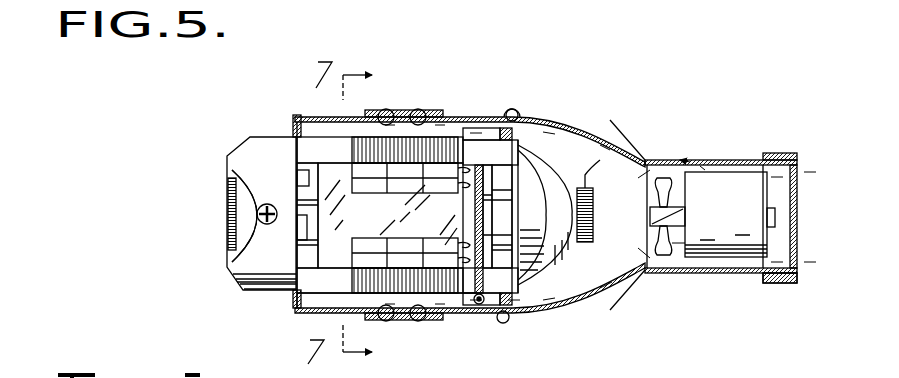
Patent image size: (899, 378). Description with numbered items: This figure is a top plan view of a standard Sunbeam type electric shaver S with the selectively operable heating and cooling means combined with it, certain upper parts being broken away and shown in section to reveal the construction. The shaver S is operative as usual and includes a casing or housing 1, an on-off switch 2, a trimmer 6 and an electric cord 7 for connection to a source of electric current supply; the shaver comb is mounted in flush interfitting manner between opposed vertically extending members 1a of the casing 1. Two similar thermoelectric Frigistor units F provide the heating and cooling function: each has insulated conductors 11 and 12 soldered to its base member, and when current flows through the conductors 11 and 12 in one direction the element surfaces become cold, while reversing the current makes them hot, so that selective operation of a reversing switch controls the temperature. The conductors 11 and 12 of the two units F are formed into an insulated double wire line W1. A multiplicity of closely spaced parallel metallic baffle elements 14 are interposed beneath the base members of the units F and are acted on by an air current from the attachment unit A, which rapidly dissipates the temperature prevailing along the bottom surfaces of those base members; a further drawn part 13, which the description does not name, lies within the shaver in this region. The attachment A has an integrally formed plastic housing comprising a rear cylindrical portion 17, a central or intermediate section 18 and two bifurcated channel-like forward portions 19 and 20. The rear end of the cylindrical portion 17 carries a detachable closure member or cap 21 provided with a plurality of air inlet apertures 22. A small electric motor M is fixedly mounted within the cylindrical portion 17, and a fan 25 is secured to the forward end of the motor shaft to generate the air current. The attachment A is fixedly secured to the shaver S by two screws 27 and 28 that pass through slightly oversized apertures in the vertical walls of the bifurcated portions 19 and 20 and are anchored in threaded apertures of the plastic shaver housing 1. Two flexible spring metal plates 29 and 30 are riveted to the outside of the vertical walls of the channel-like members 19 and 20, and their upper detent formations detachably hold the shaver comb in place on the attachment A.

The casing or housing 1 is at (300, 296).
The vertically extending member 1a is at (262, 137).
The on-off switch 2 is at (603, 160).
The trimmer 6 is at (228, 210).
The electric cord 7 is at (340, 213).
The insulated conductor 11 is at (478, 172).
The insulated conductor 12 is at (462, 196).
The lens 13 is at (538, 300).
The metallic baffle wires or elements 14 is at (352, 156).
The rear cylindrical portion 17 is at (742, 160).
The central or intermediate section 18 is at (632, 262).
The bifurcated channel-like forward portion 19 is at (317, 117).
The bifurcated channel-like forward portion 20 is at (325, 308).
The closure member or cap 21 is at (778, 283).
The air inlet apertures 22 is at (795, 153).
The fan 25 is at (663, 178).
The screw 27 is at (514, 110).
The screw 28 is at (508, 323).
The flexible spring metal plate 29 is at (398, 110).
The flexible spring metal plate 30 is at (420, 321).
The attachment unit A is at (713, 92).
The Frigistor unit F is at (352, 198).
The electric motor M is at (700, 185).
The Sunbeam electric shaver S is at (232, 283).
The insulated double wire line W1 is at (481, 305).